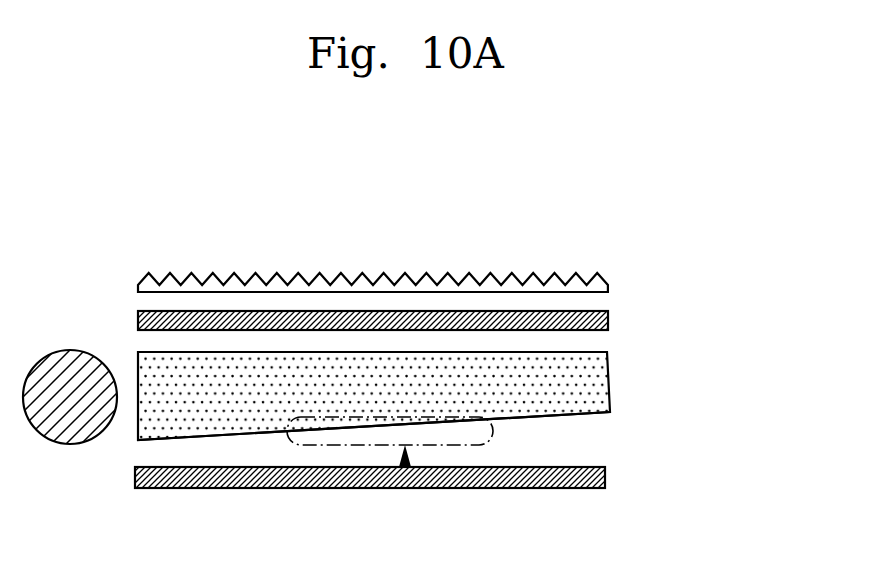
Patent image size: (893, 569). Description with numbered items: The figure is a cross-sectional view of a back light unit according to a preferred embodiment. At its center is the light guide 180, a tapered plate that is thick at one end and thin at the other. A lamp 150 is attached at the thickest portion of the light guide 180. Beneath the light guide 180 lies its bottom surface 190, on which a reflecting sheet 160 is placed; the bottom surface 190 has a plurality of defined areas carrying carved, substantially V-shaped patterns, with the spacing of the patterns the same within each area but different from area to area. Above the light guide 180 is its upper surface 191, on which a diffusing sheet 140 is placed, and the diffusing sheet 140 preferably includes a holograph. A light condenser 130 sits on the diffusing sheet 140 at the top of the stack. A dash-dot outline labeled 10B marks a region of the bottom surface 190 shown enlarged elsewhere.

The light condenser 130 is at (378, 273).
The diffusing sheet 140 is at (607, 320).
The lamp 150 is at (33, 427).
The reflecting sheet 160 is at (252, 488).
The light guide 180 is at (597, 398).
The bottom surface 190 is at (590, 415).
The upper surface 191 is at (167, 358).
The enlarged region shown in Fig. 10B is at (405, 467).